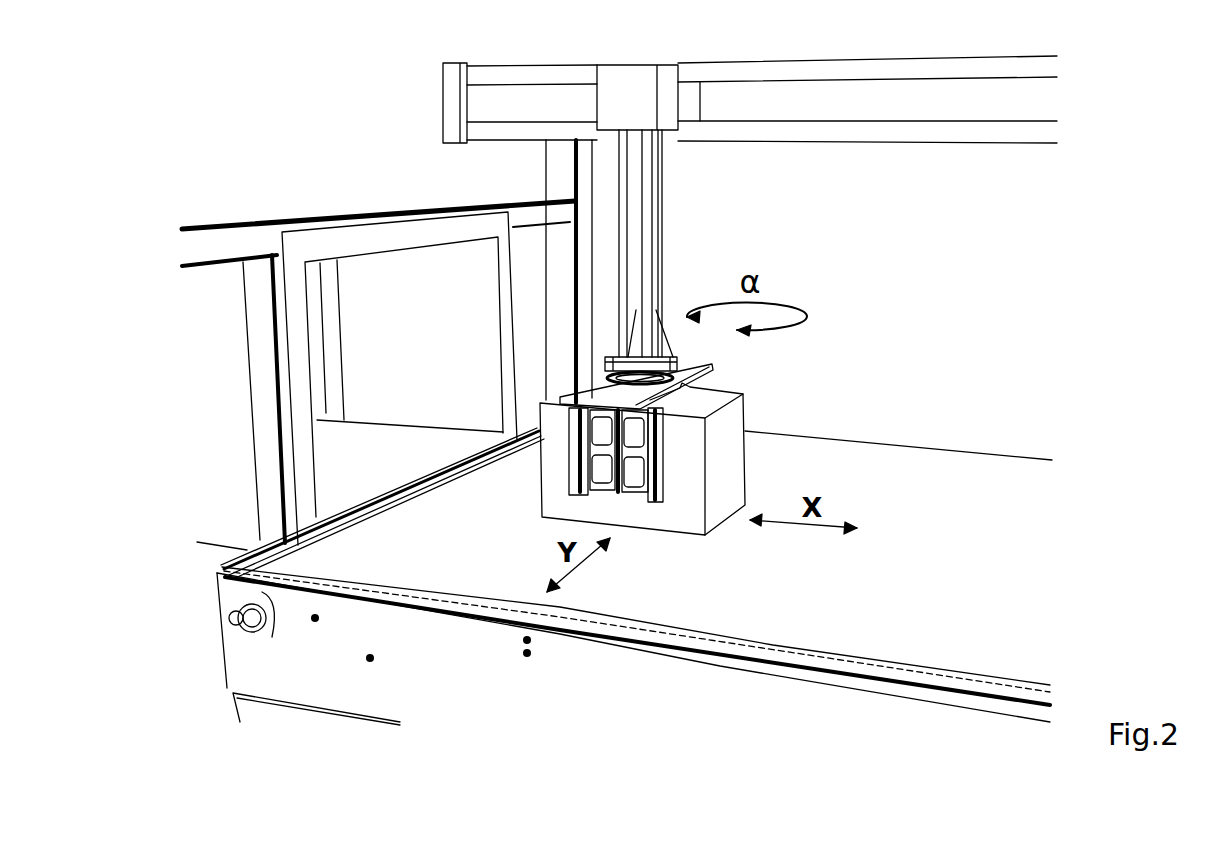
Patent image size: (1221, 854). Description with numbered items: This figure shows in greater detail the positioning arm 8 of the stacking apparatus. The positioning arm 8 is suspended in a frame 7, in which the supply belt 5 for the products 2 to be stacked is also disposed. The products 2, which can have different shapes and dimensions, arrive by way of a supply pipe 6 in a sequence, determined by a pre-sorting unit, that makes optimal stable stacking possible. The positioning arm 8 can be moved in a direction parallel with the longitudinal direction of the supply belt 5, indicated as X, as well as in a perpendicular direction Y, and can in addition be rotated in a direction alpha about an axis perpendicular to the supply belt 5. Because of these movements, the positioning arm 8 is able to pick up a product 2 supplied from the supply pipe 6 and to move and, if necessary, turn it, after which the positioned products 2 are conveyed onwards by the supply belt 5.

The product 2 is at (672, 510).
The supply belt 5 is at (713, 607).
The supply pipe 6 is at (432, 262).
The frame 7 is at (483, 103).
The positioning arm 8 is at (628, 490).